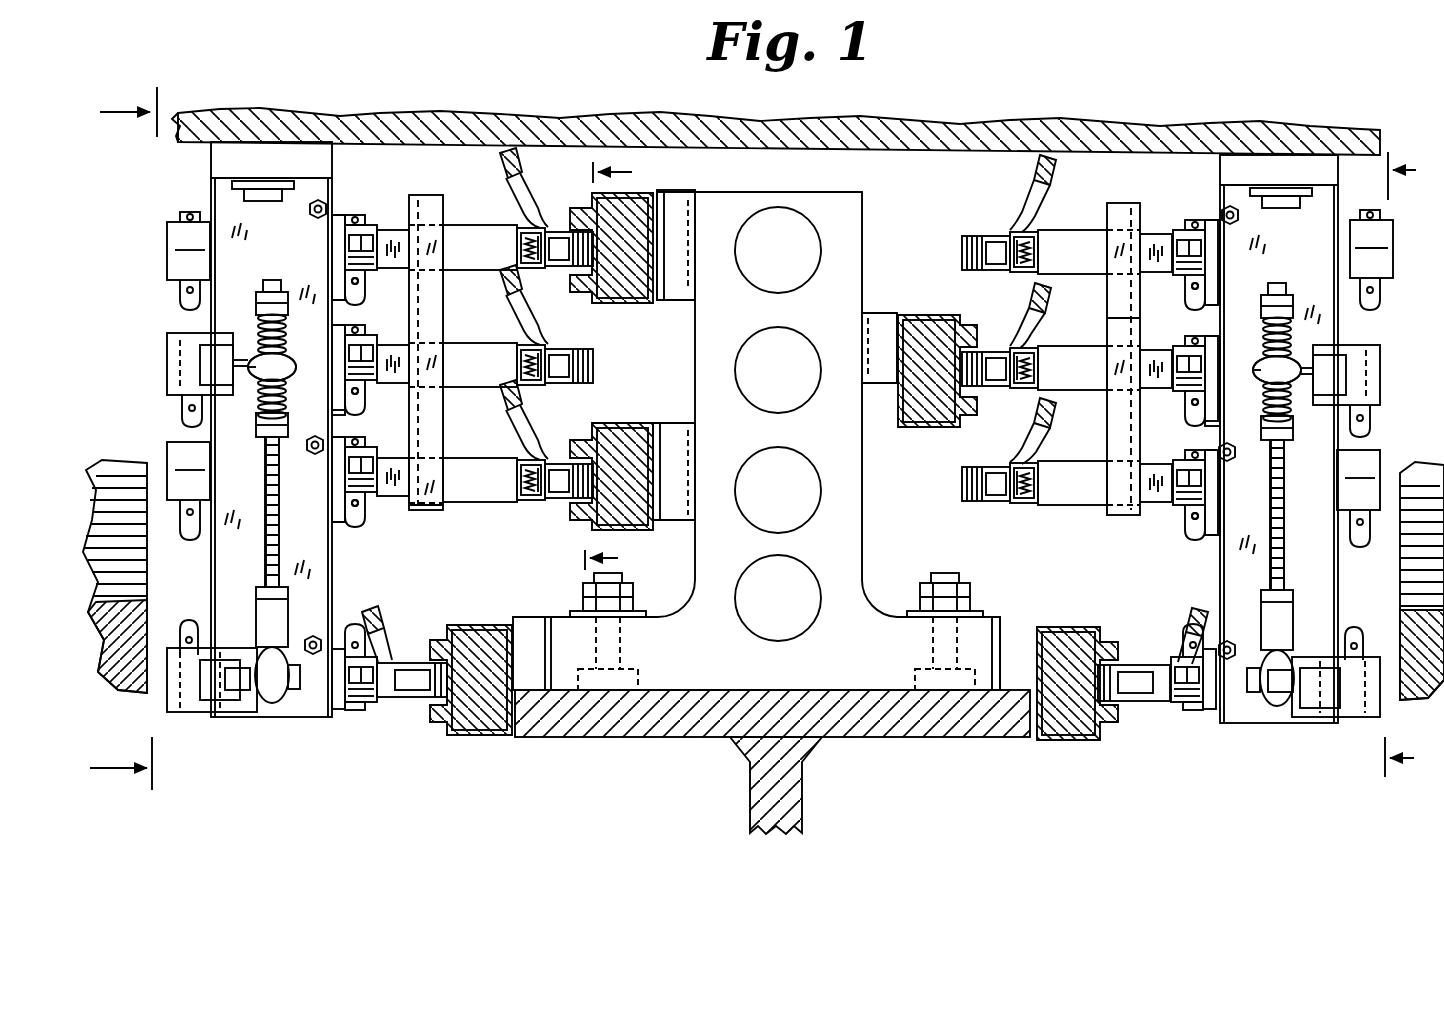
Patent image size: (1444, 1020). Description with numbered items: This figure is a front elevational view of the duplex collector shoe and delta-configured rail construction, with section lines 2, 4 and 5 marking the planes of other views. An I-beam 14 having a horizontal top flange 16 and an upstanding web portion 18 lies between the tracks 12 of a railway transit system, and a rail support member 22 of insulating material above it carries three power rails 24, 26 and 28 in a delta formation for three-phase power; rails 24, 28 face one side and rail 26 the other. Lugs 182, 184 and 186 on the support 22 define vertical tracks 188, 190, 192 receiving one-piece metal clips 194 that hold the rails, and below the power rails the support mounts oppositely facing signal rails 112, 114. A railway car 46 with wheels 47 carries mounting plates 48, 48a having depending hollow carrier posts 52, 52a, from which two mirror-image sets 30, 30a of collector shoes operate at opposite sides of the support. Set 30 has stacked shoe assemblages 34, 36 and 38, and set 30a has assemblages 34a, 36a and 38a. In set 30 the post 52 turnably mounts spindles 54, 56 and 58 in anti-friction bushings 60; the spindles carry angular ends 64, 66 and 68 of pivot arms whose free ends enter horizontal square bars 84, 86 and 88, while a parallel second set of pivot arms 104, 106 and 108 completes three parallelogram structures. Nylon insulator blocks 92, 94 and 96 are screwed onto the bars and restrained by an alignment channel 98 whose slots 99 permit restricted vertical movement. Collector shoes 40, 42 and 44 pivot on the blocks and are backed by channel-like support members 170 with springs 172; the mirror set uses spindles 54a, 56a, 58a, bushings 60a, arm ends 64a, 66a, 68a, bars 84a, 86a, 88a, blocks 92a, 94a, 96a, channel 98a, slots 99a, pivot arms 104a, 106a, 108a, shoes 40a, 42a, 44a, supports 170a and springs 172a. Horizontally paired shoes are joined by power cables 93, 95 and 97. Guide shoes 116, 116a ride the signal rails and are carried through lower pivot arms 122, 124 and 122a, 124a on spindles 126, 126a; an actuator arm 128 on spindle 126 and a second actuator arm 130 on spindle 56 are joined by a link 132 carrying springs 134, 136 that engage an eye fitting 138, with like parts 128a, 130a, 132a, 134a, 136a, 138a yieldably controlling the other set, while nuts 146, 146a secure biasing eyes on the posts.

The section line 2- 2 is at (109, 439).
The section line 4- 4 is at (616, 366).
The section line 5- 5 is at (1409, 464).
The tracks 12 is at (136, 690).
The I-beam 14 is at (742, 802).
The horizontal top flange portion 16 is at (648, 726).
The upstanding web portion 18 is at (786, 790).
The rail support member 22 is at (850, 498).
The power rail 24 is at (612, 303).
The power rail 26 is at (932, 419).
The power rail 28 is at (615, 438).
The set of collector shoes 30 is at (132, 306).
The set of collector shoes 30a is at (1392, 331).
The shoe assemblage 34 is at (458, 271).
The shoe assemblage 36 is at (457, 388).
The shoe assemblage 38 is at (488, 511).
The shoe assemblage 34a is at (1086, 273).
The shoe assemblage 36a is at (1086, 407).
The shoe assemblage 38a is at (1029, 505).
The collector shoe 40 is at (561, 276).
The collector shoe 42 is at (556, 388).
The collector shoe 44 is at (548, 503).
The collector shoe 40a is at (957, 236).
The collector shoe 42a is at (992, 340).
The collector shoe 44a is at (976, 505).
The railway car 46 is at (417, 136).
The wheels 47 is at (107, 466).
The mounting plate 48 is at (222, 157).
The mounting plate 48a is at (1330, 172).
The carrier post 52 is at (322, 568).
The carrier post 52a is at (1217, 587).
The spindle 54 is at (365, 226).
The spindle 56 is at (366, 338).
The spindle 58 is at (368, 449).
The spindle 54a is at (1190, 229).
The spindle 56a is at (1178, 340).
The spindle 58a is at (1180, 468).
The anti-friction bushings 60 is at (341, 242).
The anti-friction bushings 60a is at (1342, 260).
The angularly extending end of pivot arm 64 is at (183, 277).
The angularly extending end of pivot arm 66 is at (180, 400).
The angularly extending end of pivot arm 68 is at (178, 520).
The angularly extending end of pivot arm 64a is at (1378, 288).
The angularly extending end of pivot arm 66a is at (1372, 421).
The angularly extending end of pivot arm 68a is at (1358, 549).
The horizontal square-section bar 84 is at (390, 229).
The horizontal square-section bar 86 is at (392, 350).
The horizontal square-section bar 88 is at (392, 463).
The horizontal square-section bar 84a is at (1156, 233).
The horizontal square-section bar 86a is at (1157, 389).
The horizontal square-section bar 88a is at (1153, 503).
The insulator block 92 is at (448, 233).
The insulator block 94 is at (448, 351).
The insulator block 96 is at (448, 467).
The insulator block 92a is at (1092, 229).
The insulator block 94a is at (1092, 350).
The insulator block 96a is at (1081, 508).
The power cable 93 is at (518, 173).
The power cable 95 is at (518, 293).
The power cable 97 is at (518, 408).
The alignment channel 98 is at (440, 506).
The alignment channel 98a is at (1120, 316).
The slots 99 is at (424, 206).
The slots 99a is at (1118, 205).
The pivot arm 104 is at (362, 300).
The pivot arm 106 is at (360, 411).
The pivot arm 108 is at (366, 528).
The pivot arm 104a is at (1180, 302).
The pivot arm 106a is at (1182, 419).
The pivot arm 108a is at (1192, 541).
The signal rail 112 is at (478, 735).
The signal rail 114 is at (1070, 737).
The guide shoe 116 is at (414, 700).
The guide shoe 116a is at (1138, 705).
The lower pivot arm 122 is at (348, 627).
The lower pivot arm 122a is at (1198, 622).
The lower pivot arm 124 is at (189, 617).
The lower pivot arm 124a is at (1358, 632).
The spindle 126 is at (368, 712).
The spindle 126a is at (1192, 712).
The actuator arm 128 is at (240, 708).
The actuator arm 128a is at (1332, 718).
The second actuator arm 130 is at (167, 352).
The second actuator arm 130a is at (1340, 375).
The link 132 is at (266, 480).
The link 132a is at (1280, 540).
The spring 134 is at (260, 326).
The spring 134a is at (1266, 332).
The spring 136 is at (258, 402).
The spring 136a is at (1266, 402).
The eye fitting 138 is at (288, 368).
The eye fitting 138a is at (1277, 370).
The nuts 146 is at (310, 211).
The nuts 146a is at (1238, 219).
The channel-like support member 170 is at (519, 238).
The springs 172 is at (519, 259).
The channel-like support member 170a is at (1036, 241).
The springs 172a is at (1036, 262).
The lug 182 is at (683, 190).
The lug 184 is at (881, 313).
The lug 186 is at (668, 422).
The vertical slot or track 188 is at (692, 206).
The vertical slot or track 190 is at (862, 317).
The vertical slot or track 192 is at (694, 426).
The metal clip 194 is at (678, 227).